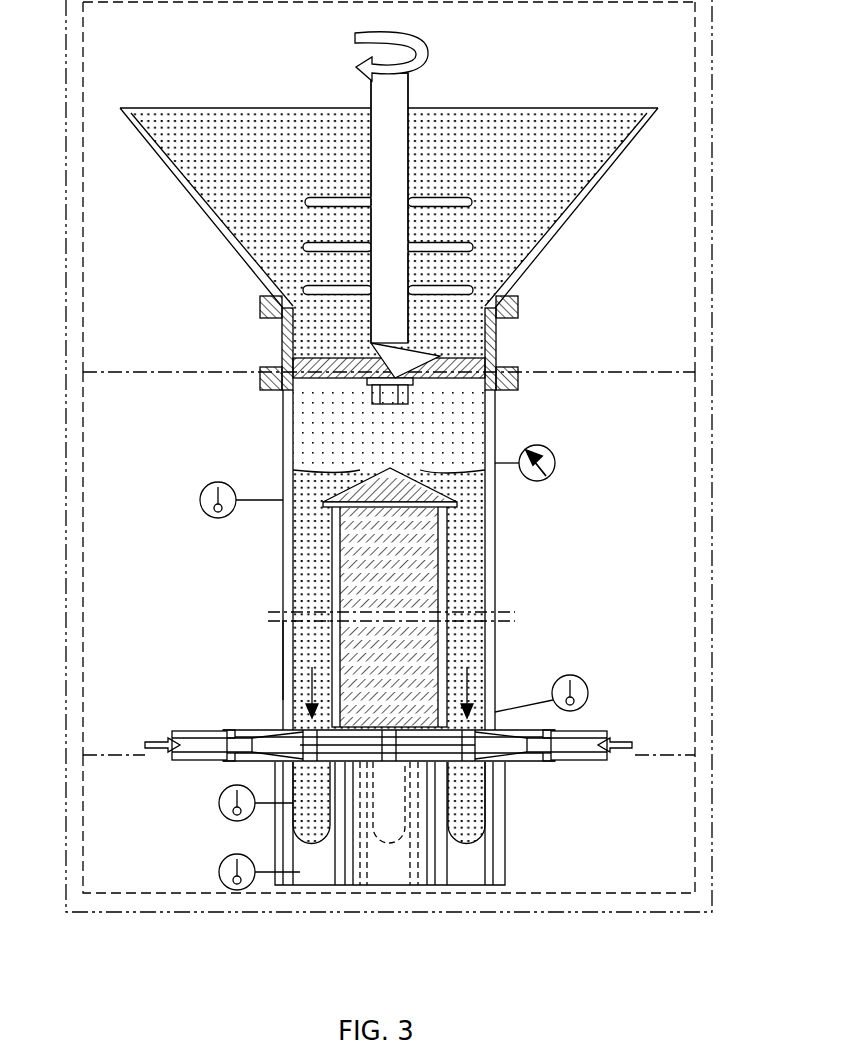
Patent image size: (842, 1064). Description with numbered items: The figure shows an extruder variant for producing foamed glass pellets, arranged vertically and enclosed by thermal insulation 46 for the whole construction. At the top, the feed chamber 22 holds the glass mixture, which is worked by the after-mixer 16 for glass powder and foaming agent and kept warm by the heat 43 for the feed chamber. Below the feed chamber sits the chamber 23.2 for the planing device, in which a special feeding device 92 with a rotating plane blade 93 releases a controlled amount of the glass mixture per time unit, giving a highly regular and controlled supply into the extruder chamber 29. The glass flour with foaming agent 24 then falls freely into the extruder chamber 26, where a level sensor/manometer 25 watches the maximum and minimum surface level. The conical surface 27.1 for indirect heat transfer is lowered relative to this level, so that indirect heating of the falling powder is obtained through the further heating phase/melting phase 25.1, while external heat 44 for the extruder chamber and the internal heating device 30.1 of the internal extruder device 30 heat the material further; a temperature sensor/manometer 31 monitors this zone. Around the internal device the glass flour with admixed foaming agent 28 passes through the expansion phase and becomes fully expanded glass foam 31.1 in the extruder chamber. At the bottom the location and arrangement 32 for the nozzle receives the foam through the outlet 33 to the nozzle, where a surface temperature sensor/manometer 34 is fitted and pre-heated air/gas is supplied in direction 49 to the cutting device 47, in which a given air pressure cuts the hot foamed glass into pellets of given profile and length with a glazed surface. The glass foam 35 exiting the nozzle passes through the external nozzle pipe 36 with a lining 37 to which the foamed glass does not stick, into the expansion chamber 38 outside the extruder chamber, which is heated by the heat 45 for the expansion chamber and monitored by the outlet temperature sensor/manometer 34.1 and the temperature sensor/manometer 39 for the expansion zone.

The after-mixer for glass powder and foaming agent 16 is at (305, 202).
The feed chamber 22 is at (577, 155).
The chamber for the planing device 23.2 is at (305, 343).
The glass flour with foaming agent in free fall 24 is at (330, 403).
The level sensor/manometer for max, minimum level 25 is at (556, 460).
The further heating phase/melting phase 25.1 is at (318, 480).
The extruder chamber 26 is at (292, 438).
The conical surface for indirect heat transfer 27.1 is at (437, 490).
The glass flour with admixed foaming agent in the expansion phase 28 is at (305, 592).
The extruder chamber 29 is at (288, 636).
The internal extruder device 30 is at (460, 576).
The internal heating device 30.1 is at (418, 547).
The temperature sensor/manometer 31 is at (205, 510).
The fully expanded glass foam in the extruder chamber 31.1 is at (478, 642).
The location and arrangement for nozzle 32 is at (297, 728).
The outlet to the nozzle 33 is at (488, 686).
The surface temperature sensor/manometer 34 is at (590, 686).
The outlet temperature from nozzle sensor/manometer 34.1 is at (224, 795).
The glass foam exiting nozzle 35 is at (478, 808).
The external nozzle pipe 36 is at (503, 850).
The lining to which the foamed glass does not stick 37 is at (490, 858).
The expansion chamber outside the extruder chamber 38 is at (305, 838).
The temperature sensor/manometer for expansion zone 39 is at (219, 872).
The heat for feed chamber 43 is at (695, 132).
The external heat for extruder chamber 44 is at (700, 548).
The heat for expansion chamber 45 is at (700, 800).
The thermal insulation for the whole construction 46 is at (66, 600).
The cutting device 47 is at (523, 763).
The direction of pre-heated air/gas 49 is at (165, 736).
The feeding device 92 is at (477, 364).
The rotating plane blade 93 is at (413, 352).